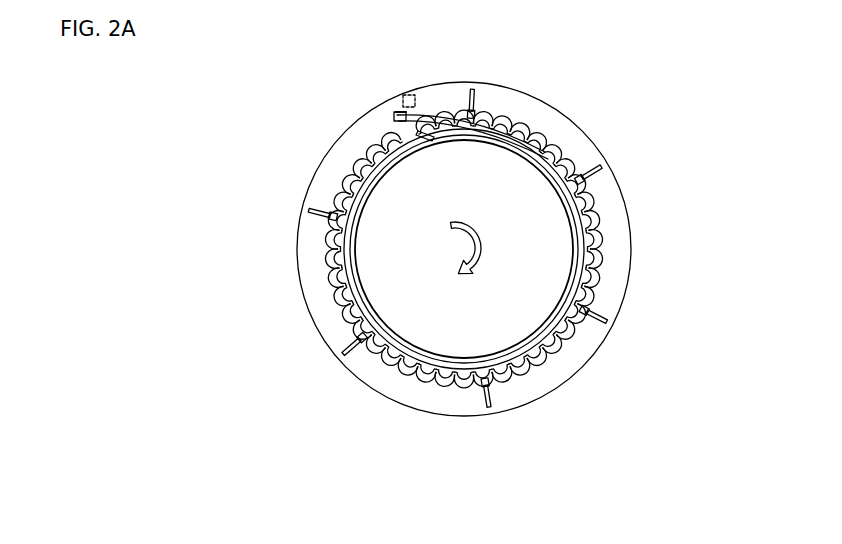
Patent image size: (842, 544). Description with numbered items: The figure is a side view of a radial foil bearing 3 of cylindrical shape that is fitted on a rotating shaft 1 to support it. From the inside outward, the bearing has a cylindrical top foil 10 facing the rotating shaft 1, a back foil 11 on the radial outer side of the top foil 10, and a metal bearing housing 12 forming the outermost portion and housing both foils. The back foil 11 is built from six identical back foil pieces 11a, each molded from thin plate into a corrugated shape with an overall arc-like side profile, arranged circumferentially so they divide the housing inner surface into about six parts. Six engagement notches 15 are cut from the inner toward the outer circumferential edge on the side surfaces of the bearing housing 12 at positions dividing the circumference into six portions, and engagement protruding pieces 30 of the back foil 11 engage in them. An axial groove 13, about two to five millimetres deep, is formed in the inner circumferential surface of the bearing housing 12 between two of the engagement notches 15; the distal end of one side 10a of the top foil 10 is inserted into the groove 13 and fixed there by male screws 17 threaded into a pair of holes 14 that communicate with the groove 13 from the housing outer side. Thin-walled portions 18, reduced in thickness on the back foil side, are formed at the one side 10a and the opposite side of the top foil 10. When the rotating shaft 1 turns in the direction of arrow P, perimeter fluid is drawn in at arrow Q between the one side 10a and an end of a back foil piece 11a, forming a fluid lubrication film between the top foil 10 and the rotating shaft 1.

The rotating shaft 1 is at (428, 320).
The radial foil bearing 3 is at (592, 96).
The top foil 10 is at (598, 272).
The one side of the top foil 10a is at (426, 127).
The back foil 11 is at (600, 258).
The back foil piece 11a is at (517, 126).
The bearing housing 12 is at (618, 232).
The groove 13 is at (440, 113).
The holes 14 is at (412, 96).
The engagement notch 15 is at (472, 88).
The male screw 17 is at (403, 99).
The thin-walled portion 18 is at (408, 143).
The engagement protruding piece 30 is at (477, 113).
The arrow P is at (446, 248).
The arrow Q is at (388, 119).